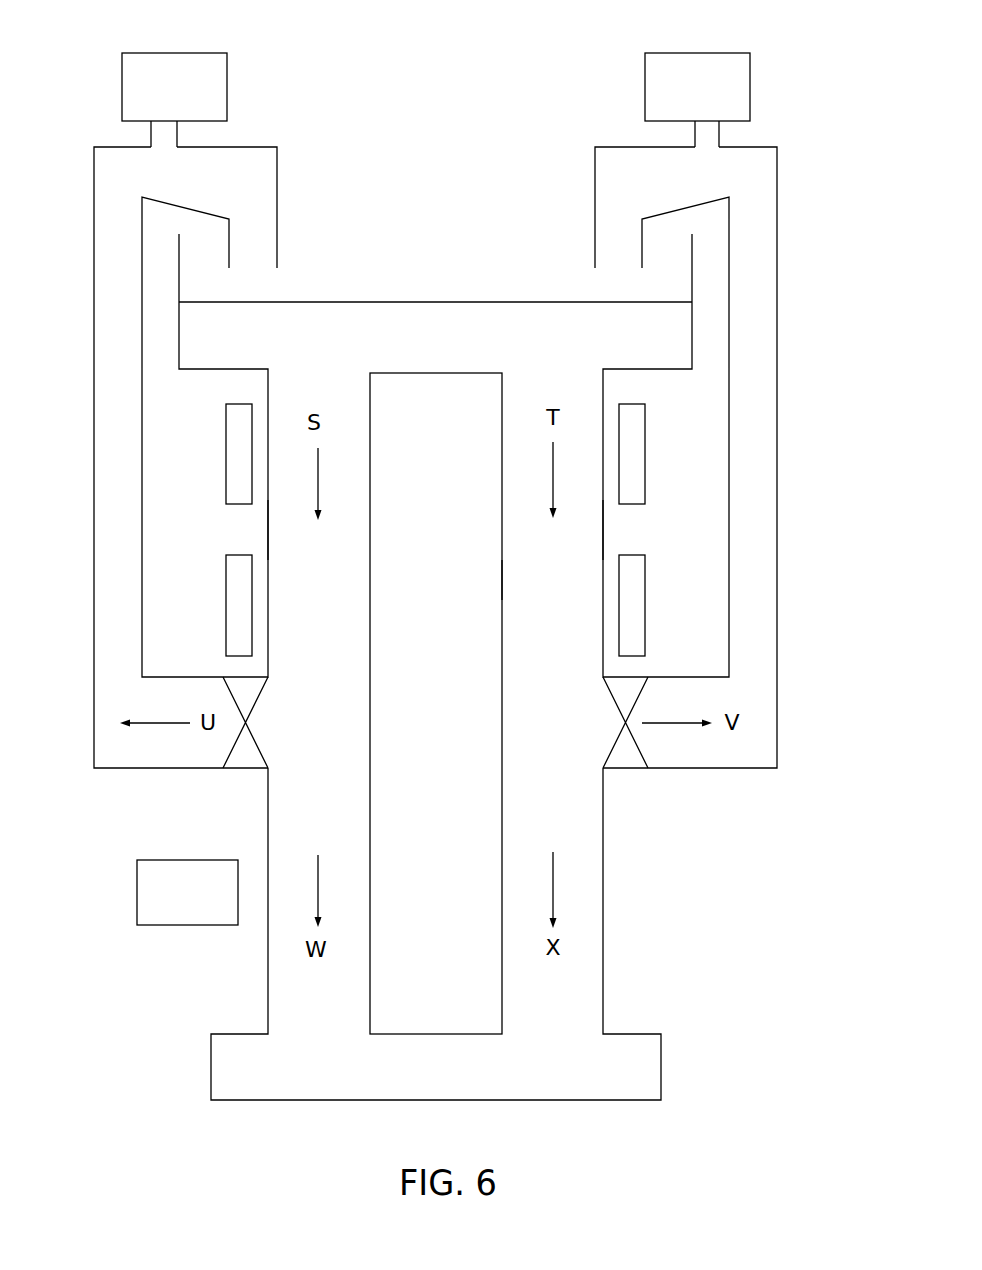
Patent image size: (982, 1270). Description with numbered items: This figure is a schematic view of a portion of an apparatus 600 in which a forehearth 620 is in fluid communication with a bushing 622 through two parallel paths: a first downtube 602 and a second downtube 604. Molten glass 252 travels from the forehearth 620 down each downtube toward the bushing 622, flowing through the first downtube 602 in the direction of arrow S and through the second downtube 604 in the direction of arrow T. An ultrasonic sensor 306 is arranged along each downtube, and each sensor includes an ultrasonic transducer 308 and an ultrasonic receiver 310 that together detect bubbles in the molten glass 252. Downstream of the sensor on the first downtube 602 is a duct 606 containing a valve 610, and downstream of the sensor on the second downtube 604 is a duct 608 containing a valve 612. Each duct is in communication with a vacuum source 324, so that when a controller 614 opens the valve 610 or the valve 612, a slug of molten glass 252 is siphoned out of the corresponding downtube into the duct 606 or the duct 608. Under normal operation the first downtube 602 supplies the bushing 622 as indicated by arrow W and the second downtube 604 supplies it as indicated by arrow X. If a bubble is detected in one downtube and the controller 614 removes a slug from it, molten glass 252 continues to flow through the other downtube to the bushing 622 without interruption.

The vacuum source 324 is at (172, 62).
The apparatus 600 is at (400, 132).
The forehearth 620 is at (452, 222).
The molten glass 252 is at (348, 325).
The first downtube 602 is at (370, 425).
The second downtube 604 is at (502, 575).
The ultrasonic sensor 306 is at (240, 530).
The ultrasonic transducer 308 is at (240, 430).
The ultrasonic receiver 310 is at (240, 625).
The duct 606 is at (133, 768).
The duct 608 is at (742, 768).
The valve 610 is at (243, 752).
The valve 612 is at (625, 750).
The controller 614 is at (192, 909).
The bushing 622 is at (649, 1058).